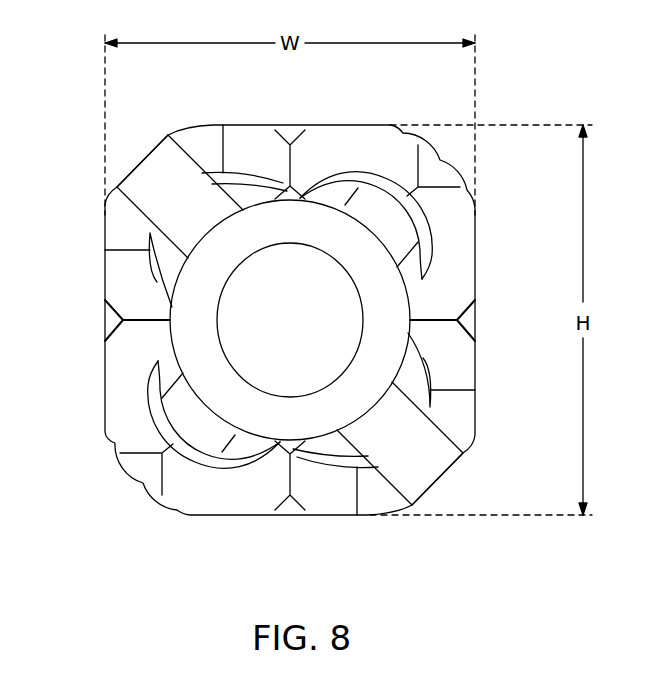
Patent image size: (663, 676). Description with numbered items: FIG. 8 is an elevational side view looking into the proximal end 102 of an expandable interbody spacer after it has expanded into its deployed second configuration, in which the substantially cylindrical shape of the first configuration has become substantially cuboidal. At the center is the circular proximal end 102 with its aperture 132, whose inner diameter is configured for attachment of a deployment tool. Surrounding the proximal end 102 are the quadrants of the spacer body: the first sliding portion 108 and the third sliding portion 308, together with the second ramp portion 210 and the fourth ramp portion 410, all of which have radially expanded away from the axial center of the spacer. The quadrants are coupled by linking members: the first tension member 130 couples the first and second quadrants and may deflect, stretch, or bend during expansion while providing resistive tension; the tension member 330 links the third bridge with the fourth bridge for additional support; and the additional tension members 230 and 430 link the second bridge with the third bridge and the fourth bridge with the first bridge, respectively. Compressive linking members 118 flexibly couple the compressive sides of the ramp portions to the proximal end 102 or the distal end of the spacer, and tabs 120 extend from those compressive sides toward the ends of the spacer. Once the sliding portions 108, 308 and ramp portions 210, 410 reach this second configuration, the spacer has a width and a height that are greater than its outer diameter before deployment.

The proximal end 102 is at (392, 293).
The aperture 132 is at (293, 244).
The compressive linking member 118 is at (158, 172).
The tabs 120 is at (208, 132).
The tension member 230 is at (295, 133).
The tension member 430 is at (292, 510).
The third sliding portion 308 is at (383, 138).
The first sliding portion 108 is at (123, 417).
The second ramp portion 210 is at (120, 268).
The fourth ramp portion 410 is at (462, 371).
The first tension member 130 is at (113, 322).
The tension member 330 is at (468, 323).